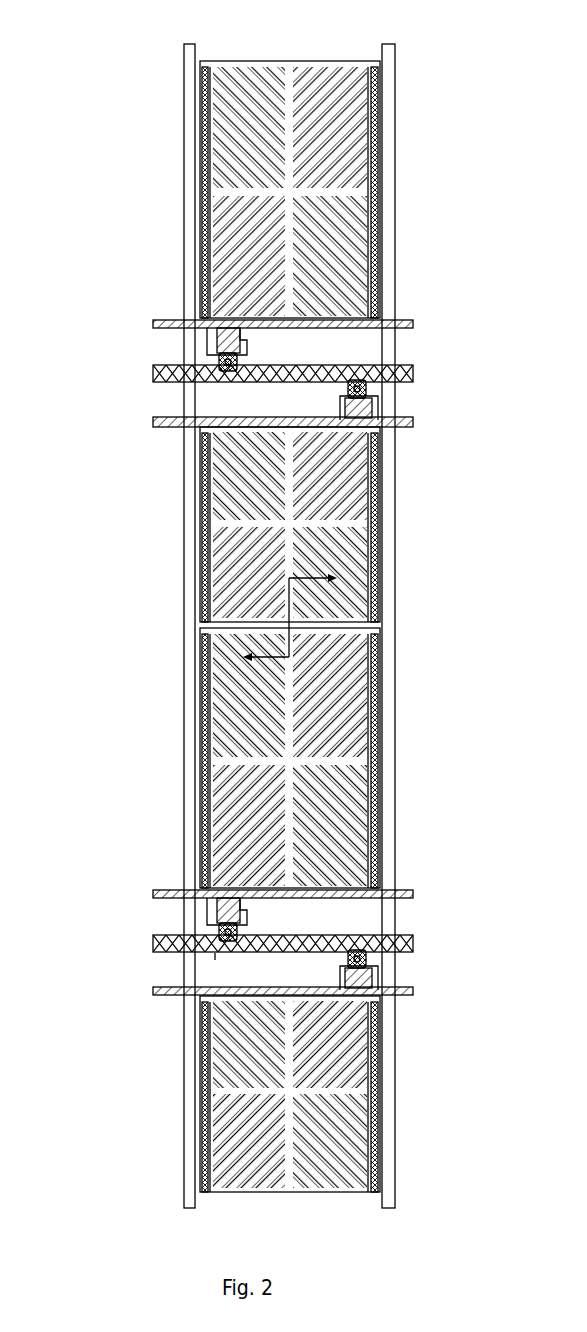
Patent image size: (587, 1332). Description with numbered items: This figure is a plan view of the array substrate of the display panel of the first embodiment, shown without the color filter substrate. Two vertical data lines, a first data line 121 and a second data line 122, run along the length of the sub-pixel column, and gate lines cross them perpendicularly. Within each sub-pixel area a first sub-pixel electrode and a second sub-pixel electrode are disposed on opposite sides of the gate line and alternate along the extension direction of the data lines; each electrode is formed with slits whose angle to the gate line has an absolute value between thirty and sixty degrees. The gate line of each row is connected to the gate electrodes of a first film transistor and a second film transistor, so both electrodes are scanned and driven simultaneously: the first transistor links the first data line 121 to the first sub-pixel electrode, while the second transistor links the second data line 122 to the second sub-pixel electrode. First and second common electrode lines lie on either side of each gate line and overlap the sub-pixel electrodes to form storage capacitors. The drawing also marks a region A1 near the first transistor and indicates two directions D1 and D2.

The first data line 121 is at (188, 50).
The second data line 122 is at (388, 53).
The region A1 is at (217, 960).
The first direction D1 is at (266, 665).
The second direction D2 is at (318, 615).